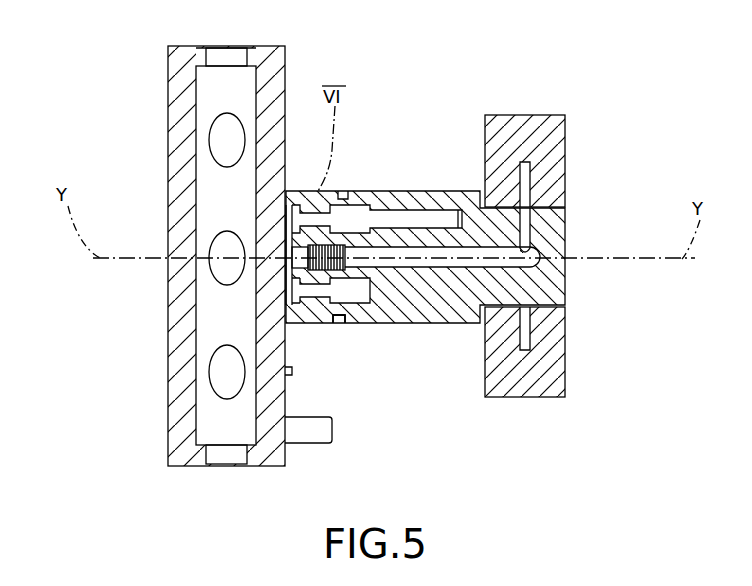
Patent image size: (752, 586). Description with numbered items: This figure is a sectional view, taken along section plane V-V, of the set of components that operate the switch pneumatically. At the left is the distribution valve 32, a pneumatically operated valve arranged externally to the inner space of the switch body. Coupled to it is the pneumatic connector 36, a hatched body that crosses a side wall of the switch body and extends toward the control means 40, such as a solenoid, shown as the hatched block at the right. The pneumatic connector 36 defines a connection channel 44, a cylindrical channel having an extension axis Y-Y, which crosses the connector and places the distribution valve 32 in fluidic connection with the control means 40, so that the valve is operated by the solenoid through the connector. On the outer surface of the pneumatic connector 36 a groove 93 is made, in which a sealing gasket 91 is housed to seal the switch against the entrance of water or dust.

The distribution valve 32 is at (168, 434).
The pneumatic connector 36 is at (436, 313).
The control means 40 is at (552, 133).
The connection channel 44 is at (422, 191).
The sealing gasket 91 is at (340, 322).
The groove 93 is at (339, 319).